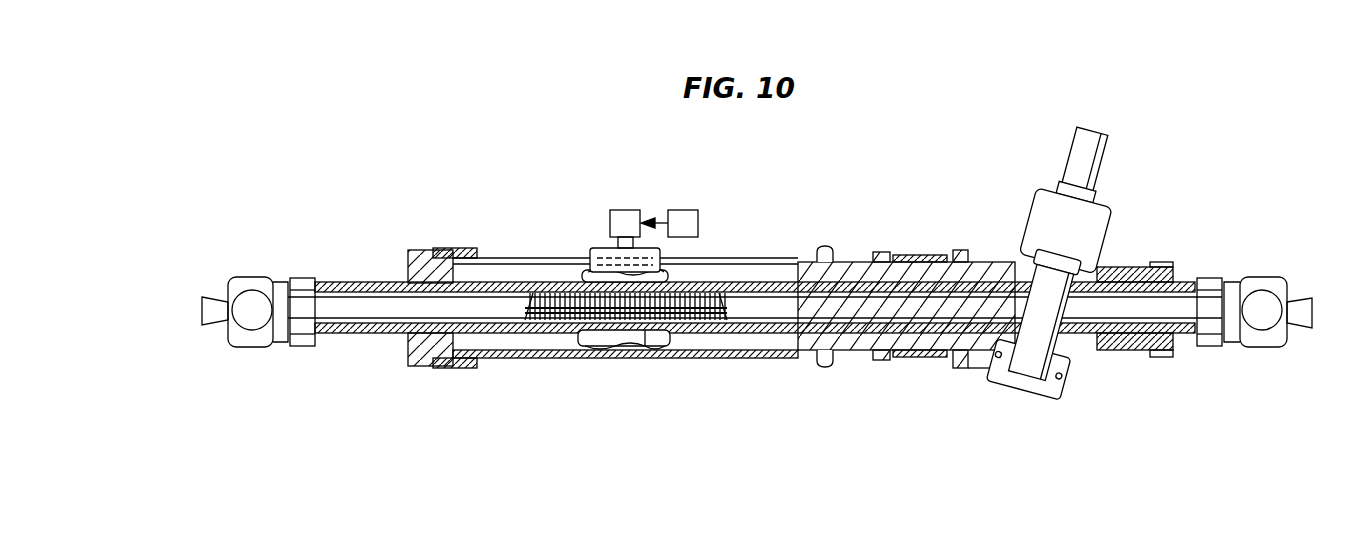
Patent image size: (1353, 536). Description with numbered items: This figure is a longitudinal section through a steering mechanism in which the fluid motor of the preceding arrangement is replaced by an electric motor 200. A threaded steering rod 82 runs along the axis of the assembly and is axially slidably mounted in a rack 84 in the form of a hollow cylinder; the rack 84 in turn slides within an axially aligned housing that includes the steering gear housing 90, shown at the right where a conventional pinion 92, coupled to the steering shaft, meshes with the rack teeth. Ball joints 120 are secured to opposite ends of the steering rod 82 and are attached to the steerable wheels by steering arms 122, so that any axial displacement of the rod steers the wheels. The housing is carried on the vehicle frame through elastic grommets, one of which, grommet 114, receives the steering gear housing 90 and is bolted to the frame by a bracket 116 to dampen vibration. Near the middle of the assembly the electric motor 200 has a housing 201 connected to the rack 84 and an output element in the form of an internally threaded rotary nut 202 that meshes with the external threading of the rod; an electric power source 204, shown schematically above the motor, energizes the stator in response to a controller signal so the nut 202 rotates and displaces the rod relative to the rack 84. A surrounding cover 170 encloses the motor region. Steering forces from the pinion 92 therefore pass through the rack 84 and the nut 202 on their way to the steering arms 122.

The steering rod 82 is at (678, 208).
The rack 84 is at (1140, 357).
The steering gear housing 90 is at (843, 352).
The pinion 92 is at (1070, 355).
The elastic grommet 114 is at (915, 357).
The bracket 116 is at (458, 250).
The ball joint 120 is at (247, 278).
The steering arm 122 is at (205, 300).
The cover 170 is at (777, 262).
The electric motor 200 is at (602, 358).
The housing 201 is at (603, 270).
The rotary nut 202 is at (645, 358).
The electric power source 204 is at (617, 208).